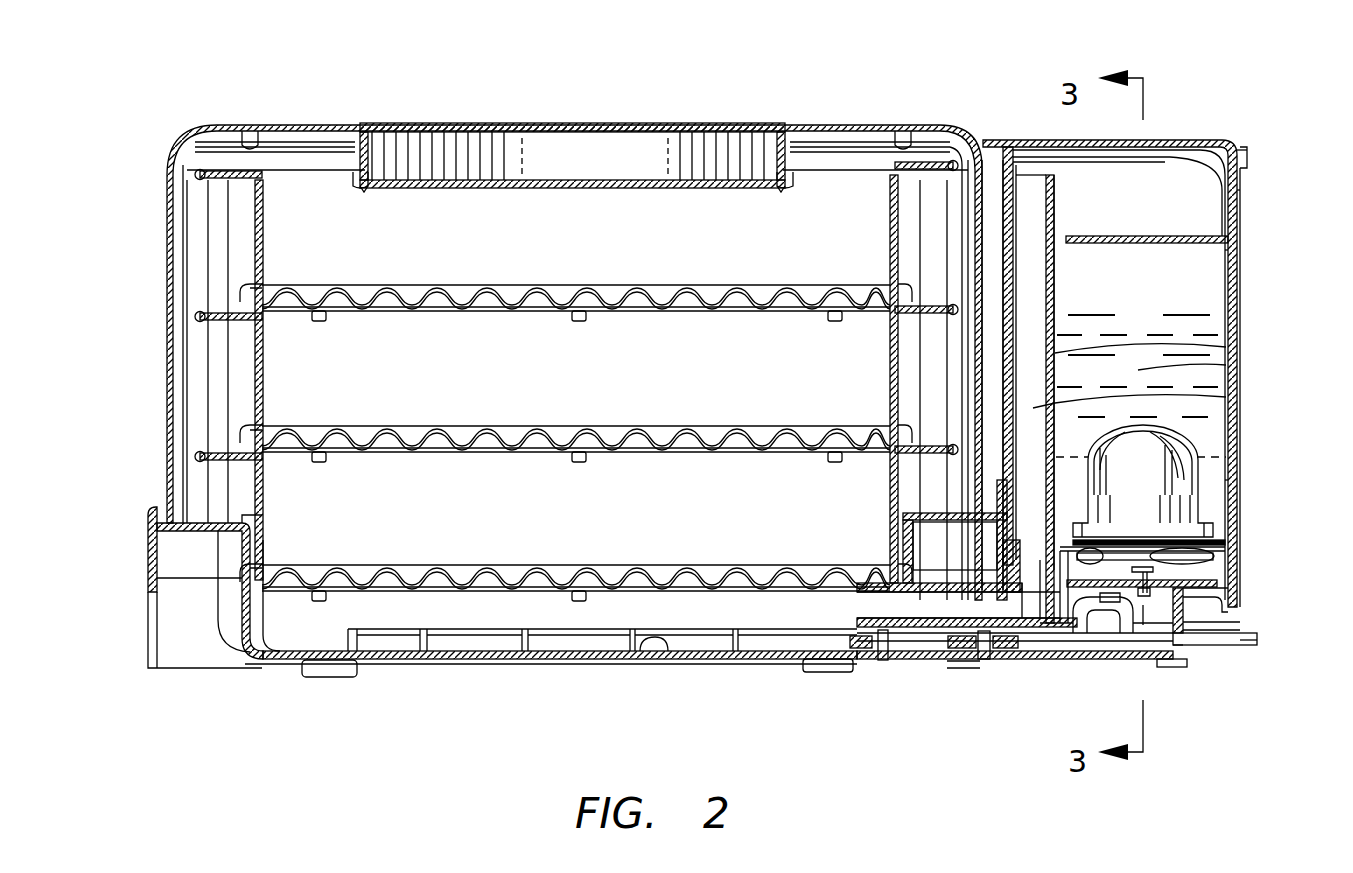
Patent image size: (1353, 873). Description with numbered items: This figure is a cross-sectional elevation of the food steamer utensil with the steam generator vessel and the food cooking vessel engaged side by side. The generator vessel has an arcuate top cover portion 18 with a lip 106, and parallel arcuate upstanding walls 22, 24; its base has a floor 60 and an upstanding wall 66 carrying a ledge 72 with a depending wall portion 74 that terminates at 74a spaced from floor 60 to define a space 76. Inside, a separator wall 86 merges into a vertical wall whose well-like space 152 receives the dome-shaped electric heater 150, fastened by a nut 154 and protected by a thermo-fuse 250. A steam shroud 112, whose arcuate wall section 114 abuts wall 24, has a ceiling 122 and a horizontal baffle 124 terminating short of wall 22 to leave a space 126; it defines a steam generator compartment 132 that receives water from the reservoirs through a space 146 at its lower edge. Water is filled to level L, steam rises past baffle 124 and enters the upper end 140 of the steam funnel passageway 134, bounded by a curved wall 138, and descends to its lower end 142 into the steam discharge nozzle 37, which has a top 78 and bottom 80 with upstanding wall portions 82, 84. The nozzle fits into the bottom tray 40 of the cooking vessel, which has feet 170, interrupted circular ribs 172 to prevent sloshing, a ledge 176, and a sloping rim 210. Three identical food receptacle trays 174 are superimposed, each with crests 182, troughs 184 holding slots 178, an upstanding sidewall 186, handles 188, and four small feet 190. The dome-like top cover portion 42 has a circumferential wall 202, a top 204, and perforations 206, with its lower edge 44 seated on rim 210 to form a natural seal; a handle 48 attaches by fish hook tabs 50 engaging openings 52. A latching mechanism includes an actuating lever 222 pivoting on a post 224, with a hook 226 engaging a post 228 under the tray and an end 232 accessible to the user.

The top cover portion 18 is at (1210, 140).
The upstanding wall 22 is at (1018, 285).
The upstanding wall 24 is at (1167, 305).
The steam discharge nozzle 37 is at (878, 603).
The bottom base portion or tray 40 is at (530, 652).
The top cover portion 42 is at (808, 103).
The lower peripheral edge 44 is at (165, 520).
The handle 48 is at (500, 122).
The fish hook tabs 50 is at (355, 178).
The openings 52 is at (362, 188).
The floor 60 is at (1138, 642).
The upstanding wall 66 is at (1241, 497).
The ledge 72 is at (1240, 612).
The depending wall portion 74 is at (1188, 620).
The terminating portion of depending wall 74a is at (1192, 648).
The defined space 76 is at (1180, 652).
The nozzle top 78 is at (960, 590).
The nozzle bottom 80 is at (962, 652).
The upstanding wall portion 82 is at (1010, 651).
The upstanding wall portion 84 is at (1093, 603).
The separator wall 86 is at (1062, 547).
The lip 106 is at (1248, 165).
The steam shroud 112 is at (1242, 200).
The arcuate wall section 114 is at (1226, 270).
The ceiling 122 is at (1176, 157).
The horizontal baffle 124 is at (1184, 236).
The space 126 is at (1056, 234).
The steam generator compartment 132 is at (1240, 375).
The steam funnel passageway 134 is at (1240, 400).
The curved wall 138 is at (1240, 350).
The upper end of funnel 140 is at (1030, 187).
The lower end of funnel 142 is at (1030, 596).
The space 146 is at (1222, 525).
The electric heater 150 is at (1163, 477).
The well-like space 152 is at (1200, 438).
The nut 154 is at (1212, 565).
The feet 170 is at (330, 678).
The interrupted circular ribs 172 is at (440, 652).
The food receptacle tray 174 is at (650, 562).
The ledge 176 is at (266, 645).
The slots 178 is at (432, 302).
The crests 182 is at (405, 285).
The troughs 184 is at (352, 308).
The upstanding sidewall 186 is at (263, 390).
The handles 188 is at (200, 314).
The feet 190 is at (830, 321).
The circumferential wall 202 is at (165, 305).
The top 204 is at (330, 126).
The perforations 206 is at (245, 132).
The sloping rim 210 is at (218, 532).
The actuating lever 222 is at (1245, 650).
The post 224 is at (984, 660).
The hook 226 is at (858, 652).
The post 228 is at (883, 660).
The lever end 232 is at (1257, 645).
The thermo-fuse 250 is at (1105, 652).